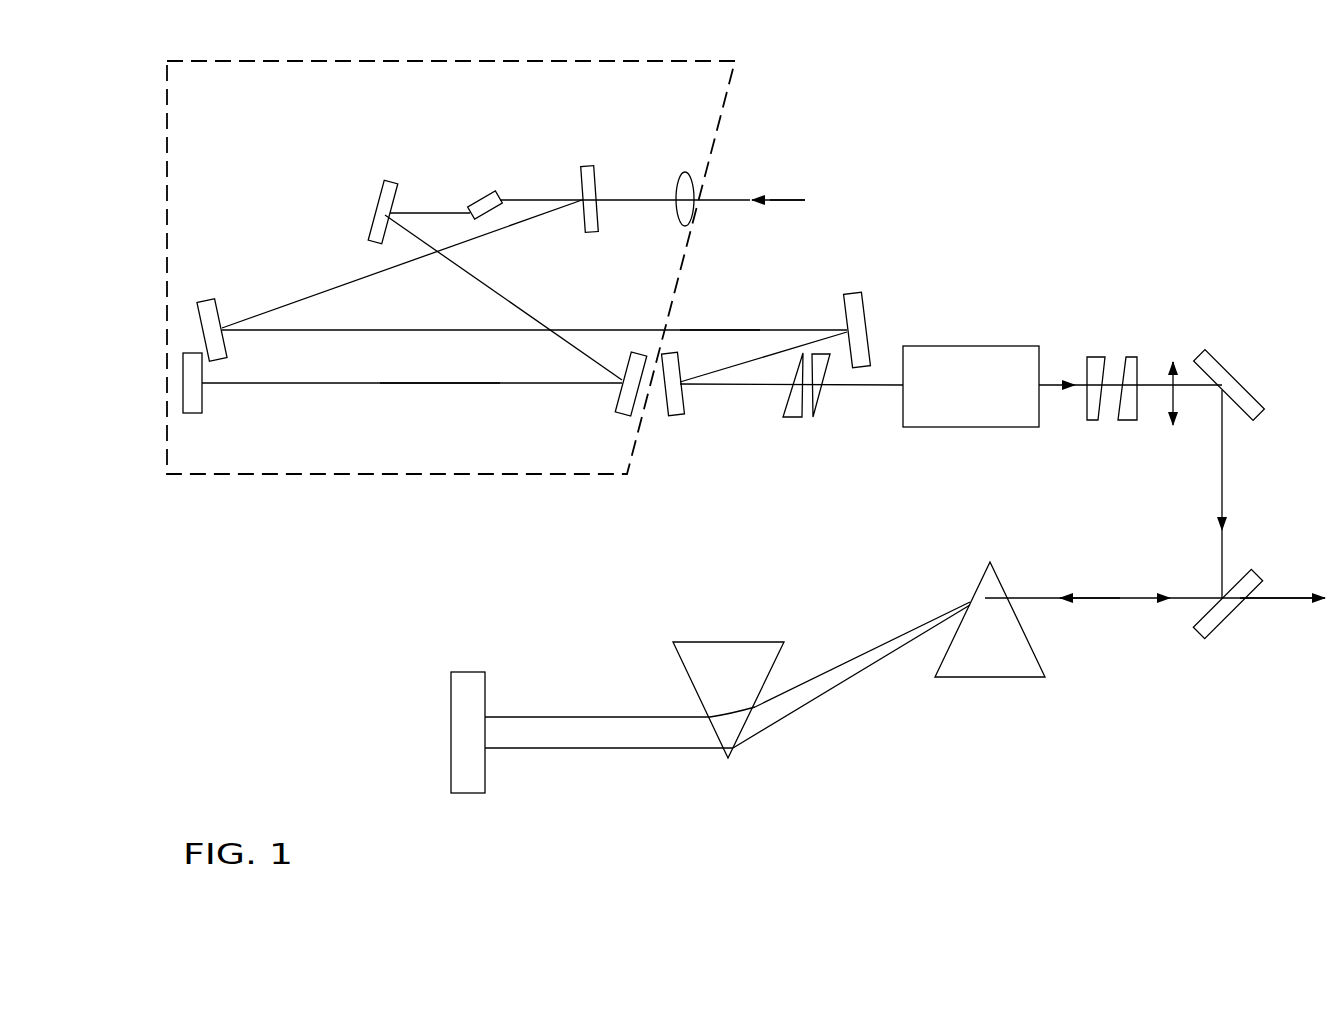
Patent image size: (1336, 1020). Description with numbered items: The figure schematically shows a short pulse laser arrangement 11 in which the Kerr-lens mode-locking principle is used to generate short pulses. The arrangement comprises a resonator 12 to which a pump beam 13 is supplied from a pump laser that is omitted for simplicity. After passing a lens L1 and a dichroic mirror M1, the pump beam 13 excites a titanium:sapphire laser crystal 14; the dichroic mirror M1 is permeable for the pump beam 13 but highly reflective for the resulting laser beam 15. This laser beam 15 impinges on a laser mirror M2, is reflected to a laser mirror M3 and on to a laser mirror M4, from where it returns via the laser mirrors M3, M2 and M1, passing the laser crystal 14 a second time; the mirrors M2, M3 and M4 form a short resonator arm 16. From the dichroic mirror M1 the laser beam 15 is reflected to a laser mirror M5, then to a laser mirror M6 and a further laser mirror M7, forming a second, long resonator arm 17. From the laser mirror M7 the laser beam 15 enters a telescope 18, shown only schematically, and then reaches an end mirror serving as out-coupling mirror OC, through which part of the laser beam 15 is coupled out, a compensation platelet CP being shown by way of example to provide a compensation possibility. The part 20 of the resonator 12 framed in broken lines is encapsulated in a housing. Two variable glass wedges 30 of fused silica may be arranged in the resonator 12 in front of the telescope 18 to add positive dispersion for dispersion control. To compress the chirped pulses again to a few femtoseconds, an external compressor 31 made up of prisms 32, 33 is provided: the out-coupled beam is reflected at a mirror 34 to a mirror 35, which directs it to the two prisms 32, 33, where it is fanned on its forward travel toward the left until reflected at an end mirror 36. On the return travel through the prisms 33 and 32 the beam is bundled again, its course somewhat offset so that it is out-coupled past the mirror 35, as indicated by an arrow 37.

The short pulse laser arrangement 11 is at (830, 121).
The resonator 12 is at (668, 468).
The pump beam 13 is at (774, 198).
The laser crystal 14 is at (485, 198).
The laser beam 15 is at (520, 306).
The short resonator arm 16 is at (440, 392).
The long resonator arm 17 is at (720, 322).
The telescope 18 is at (930, 344).
The part of the laser resonator 20 is at (345, 478).
The glass wedges 30 is at (812, 432).
The compressor 31 is at (913, 800).
The prism 32 is at (980, 590).
The prism 33 is at (722, 640).
The mirror 34 is at (1228, 366).
The mirror 35 is at (1232, 624).
The end mirror 36 is at (450, 728).
The arrow 37 is at (1278, 606).
The dichroic mirror M1 is at (592, 176).
The laser mirror M2 is at (378, 207).
The laser mirror M3 is at (625, 396).
The laser mirror M4 is at (205, 402).
The laser mirror M5 is at (216, 316).
The laser mirror M6 is at (850, 315).
The laser mirror M7 is at (678, 398).
The lens L1 is at (687, 182).
The out-coupling mirror OC is at (1094, 355).
The compensation platelet CP is at (1134, 355).